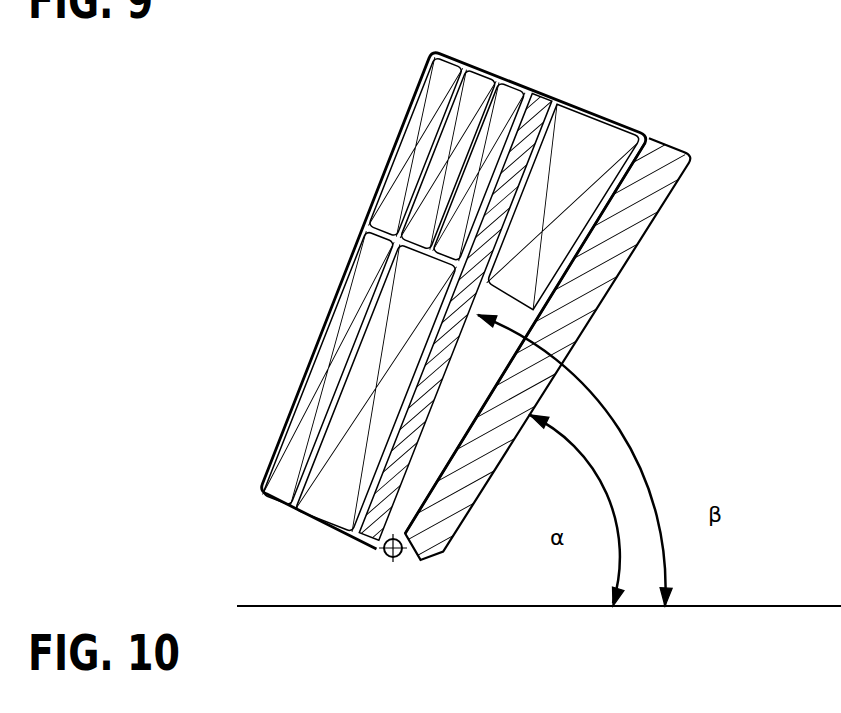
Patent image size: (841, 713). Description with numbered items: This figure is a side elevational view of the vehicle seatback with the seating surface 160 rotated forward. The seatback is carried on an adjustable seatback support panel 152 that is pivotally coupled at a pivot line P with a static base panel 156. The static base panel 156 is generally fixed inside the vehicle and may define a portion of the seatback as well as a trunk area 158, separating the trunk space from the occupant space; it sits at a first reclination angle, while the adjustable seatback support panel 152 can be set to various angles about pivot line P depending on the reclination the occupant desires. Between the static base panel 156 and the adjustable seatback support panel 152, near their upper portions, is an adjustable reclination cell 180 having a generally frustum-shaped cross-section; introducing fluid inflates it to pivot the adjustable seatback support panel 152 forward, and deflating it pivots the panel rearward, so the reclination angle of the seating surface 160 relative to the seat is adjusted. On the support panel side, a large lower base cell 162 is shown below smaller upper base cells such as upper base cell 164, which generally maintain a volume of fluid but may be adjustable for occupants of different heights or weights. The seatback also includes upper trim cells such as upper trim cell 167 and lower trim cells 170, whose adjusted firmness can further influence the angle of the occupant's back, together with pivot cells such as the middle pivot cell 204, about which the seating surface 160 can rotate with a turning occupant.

The adjustable seatback support panel 152 is at (545, 98).
The static base panel 156 is at (603, 268).
The trunk area 158 is at (729, 440).
The seating surface 160 is at (377, 197).
The lower base cell 162 is at (347, 482).
The upper base cell 164 is at (480, 78).
The upper trim cell 167 is at (442, 90).
The lower trim cells 170 is at (327, 351).
The adjustable reclination cell 180 is at (603, 148).
The middle pivot cell 204 is at (513, 90).
The pivot line P is at (386, 554).